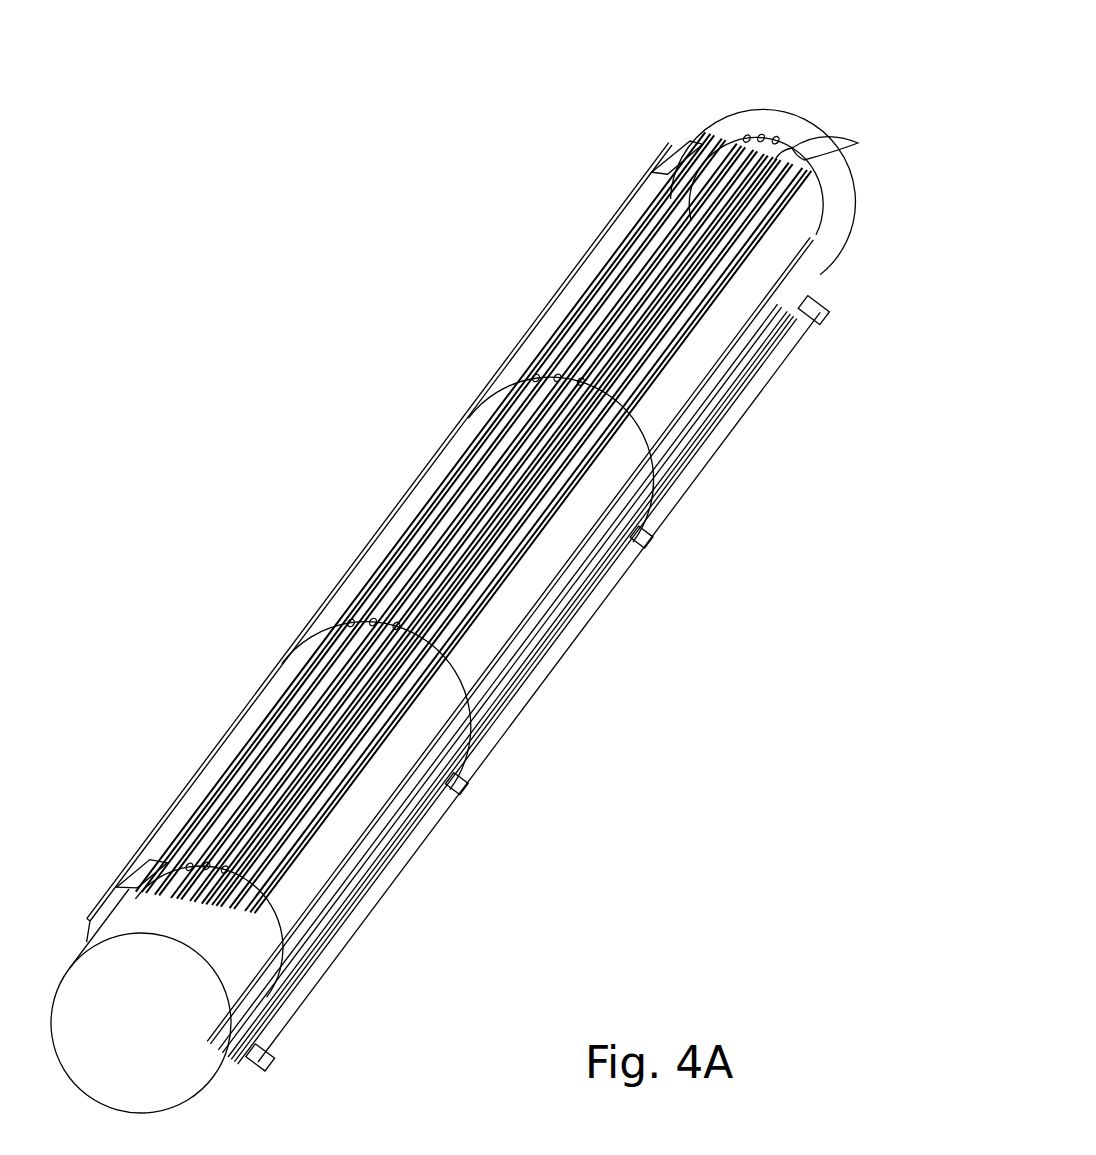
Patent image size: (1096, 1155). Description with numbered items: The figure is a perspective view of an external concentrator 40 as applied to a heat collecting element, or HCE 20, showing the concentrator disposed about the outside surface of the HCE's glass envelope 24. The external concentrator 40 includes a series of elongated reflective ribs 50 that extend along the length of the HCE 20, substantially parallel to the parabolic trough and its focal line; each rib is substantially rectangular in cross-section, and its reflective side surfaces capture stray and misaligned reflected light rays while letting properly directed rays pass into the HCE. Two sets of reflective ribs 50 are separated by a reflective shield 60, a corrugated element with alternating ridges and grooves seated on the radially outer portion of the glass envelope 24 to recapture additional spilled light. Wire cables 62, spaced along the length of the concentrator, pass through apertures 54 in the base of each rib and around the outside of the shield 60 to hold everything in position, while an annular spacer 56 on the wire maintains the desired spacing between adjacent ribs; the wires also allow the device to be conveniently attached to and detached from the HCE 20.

The heat collecting element 20 is at (797, 118).
The glass envelope 24 is at (735, 110).
The external concentrator 40 is at (432, 468).
The reflective ribs 50 is at (385, 887).
The apertures 54 is at (820, 314).
The annular spacer 56 is at (850, 142).
The reflective shield 60 is at (253, 714).
The wire cables 62 is at (817, 257).